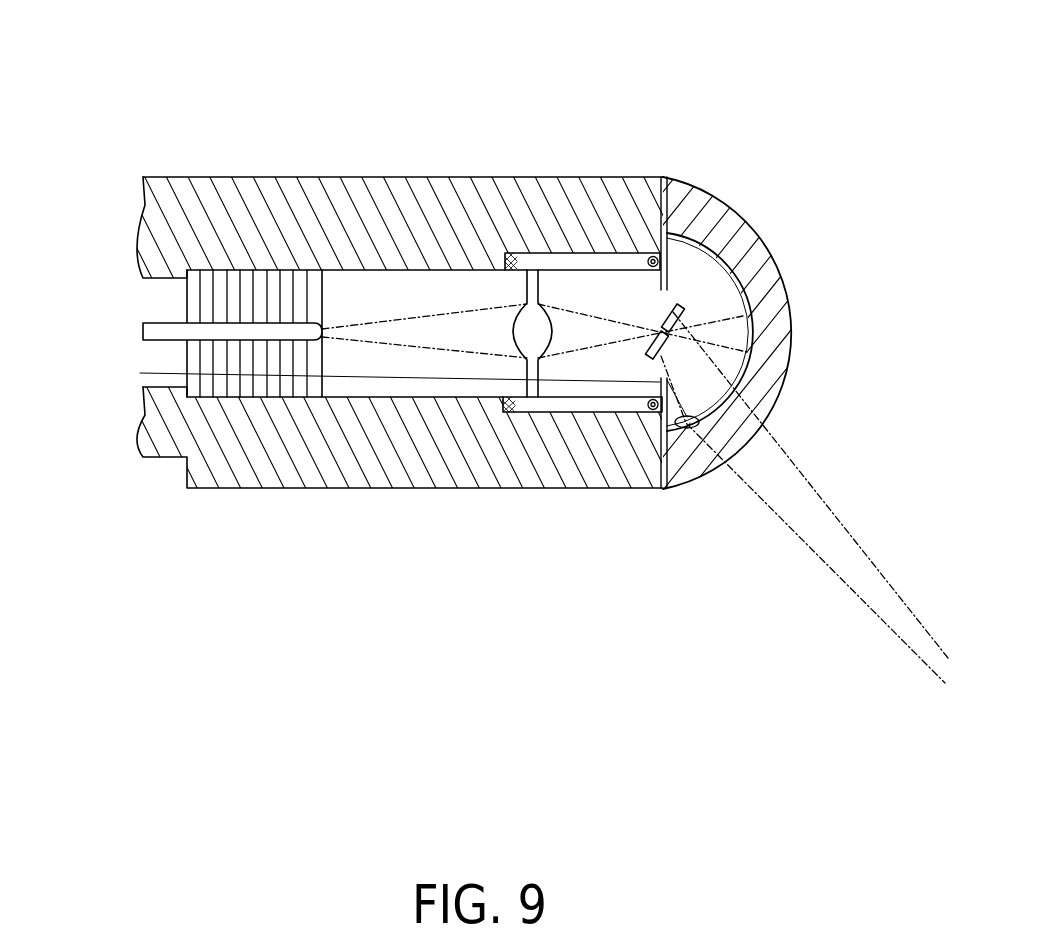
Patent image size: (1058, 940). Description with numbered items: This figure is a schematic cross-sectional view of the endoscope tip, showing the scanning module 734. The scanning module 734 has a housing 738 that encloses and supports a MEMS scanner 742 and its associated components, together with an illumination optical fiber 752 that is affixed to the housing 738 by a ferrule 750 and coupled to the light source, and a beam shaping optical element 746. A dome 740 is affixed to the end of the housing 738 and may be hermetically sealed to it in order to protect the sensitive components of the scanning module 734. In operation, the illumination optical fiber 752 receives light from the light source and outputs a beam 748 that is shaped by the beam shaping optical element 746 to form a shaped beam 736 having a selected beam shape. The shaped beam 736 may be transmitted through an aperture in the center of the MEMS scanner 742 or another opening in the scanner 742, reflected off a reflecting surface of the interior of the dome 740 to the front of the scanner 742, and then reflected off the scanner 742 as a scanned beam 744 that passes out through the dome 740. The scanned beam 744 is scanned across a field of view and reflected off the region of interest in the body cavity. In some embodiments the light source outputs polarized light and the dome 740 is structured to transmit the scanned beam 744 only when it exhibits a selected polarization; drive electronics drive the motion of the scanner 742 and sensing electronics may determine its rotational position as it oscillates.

The scanning module 734 is at (596, 108).
The shaped beam 736 is at (613, 321).
The housing 738 is at (270, 177).
The dome 740 is at (760, 268).
The MEMS scanner 742 is at (660, 358).
The scanned beam 744 is at (843, 533).
The beam shaping optical element 746 is at (553, 347).
The beam 748 is at (453, 351).
The ferrule 750 is at (322, 364).
The illumination optical fiber 752 is at (153, 342).